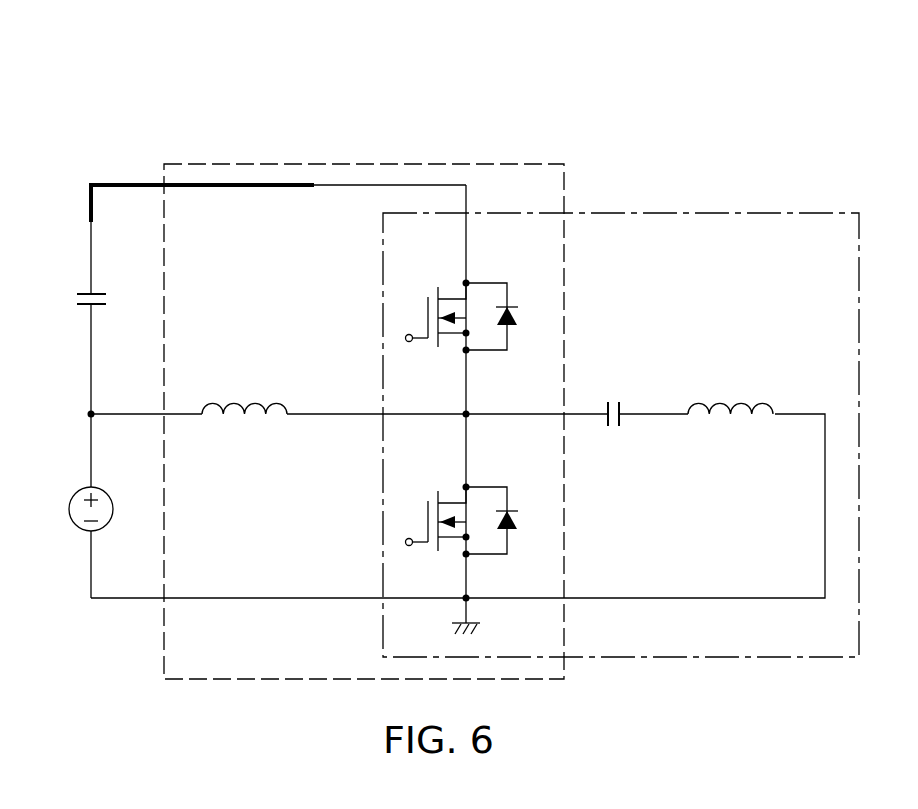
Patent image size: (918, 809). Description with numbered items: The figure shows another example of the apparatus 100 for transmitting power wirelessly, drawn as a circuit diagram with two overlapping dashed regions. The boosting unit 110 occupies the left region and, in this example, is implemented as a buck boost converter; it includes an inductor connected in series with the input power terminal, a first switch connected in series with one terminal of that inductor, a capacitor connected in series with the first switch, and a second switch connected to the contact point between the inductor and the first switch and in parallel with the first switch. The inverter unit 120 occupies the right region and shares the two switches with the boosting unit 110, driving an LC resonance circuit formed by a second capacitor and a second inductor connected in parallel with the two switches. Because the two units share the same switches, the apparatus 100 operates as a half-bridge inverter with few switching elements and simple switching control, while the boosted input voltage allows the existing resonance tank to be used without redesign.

The apparatus for transmitting power wirelessly 100 is at (448, 48).
The boosting unit 110 is at (330, 164).
The inverter unit 120 is at (640, 213).